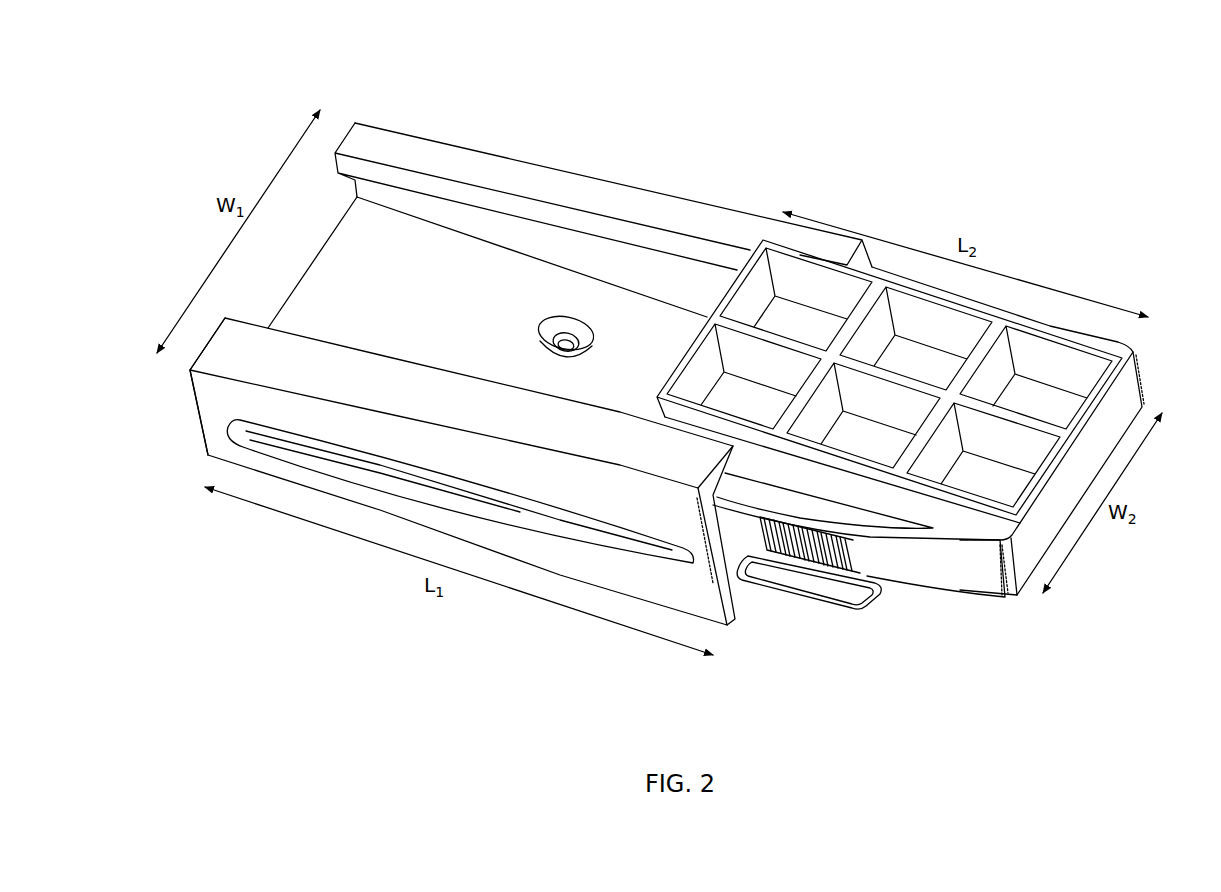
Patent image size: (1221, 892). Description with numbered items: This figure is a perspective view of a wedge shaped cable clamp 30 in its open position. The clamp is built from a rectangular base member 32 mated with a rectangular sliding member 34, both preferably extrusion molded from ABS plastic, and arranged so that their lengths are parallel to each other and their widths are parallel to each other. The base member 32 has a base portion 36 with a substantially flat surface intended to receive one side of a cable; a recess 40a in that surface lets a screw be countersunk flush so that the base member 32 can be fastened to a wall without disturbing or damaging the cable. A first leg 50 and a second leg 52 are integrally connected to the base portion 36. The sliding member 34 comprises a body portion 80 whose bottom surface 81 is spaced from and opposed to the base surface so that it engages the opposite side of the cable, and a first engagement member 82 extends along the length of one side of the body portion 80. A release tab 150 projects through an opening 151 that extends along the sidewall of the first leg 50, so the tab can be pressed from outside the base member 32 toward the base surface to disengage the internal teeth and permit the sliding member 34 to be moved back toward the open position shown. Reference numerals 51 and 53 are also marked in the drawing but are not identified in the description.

The wedge shaped cable clamp 30 is at (697, 137).
The base member 32 is at (306, 263).
The sliding member 34 is at (1103, 333).
The base portion 36 is at (747, 588).
The recess 40a is at (553, 322).
The first leg 50 is at (390, 365).
The aperture 51 is at (720, 587).
The second leg 52 is at (458, 152).
The block end face 53 is at (203, 392).
The body portion 80 is at (1130, 382).
The bottom surface 81 is at (1022, 602).
The first engagement member 82 is at (973, 585).
The release tab 150 is at (870, 598).
The opening 151 is at (290, 447).